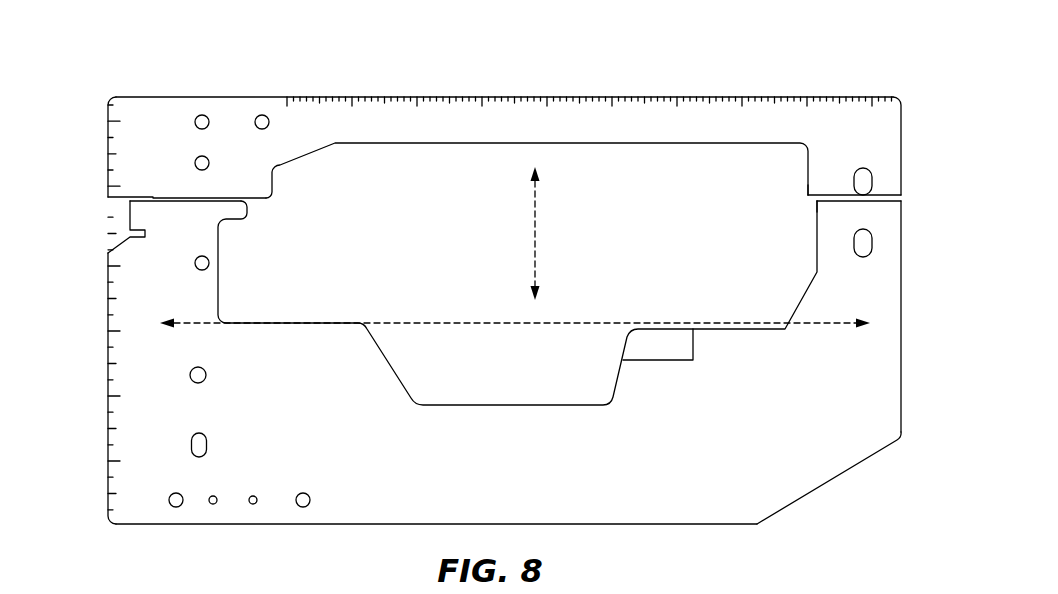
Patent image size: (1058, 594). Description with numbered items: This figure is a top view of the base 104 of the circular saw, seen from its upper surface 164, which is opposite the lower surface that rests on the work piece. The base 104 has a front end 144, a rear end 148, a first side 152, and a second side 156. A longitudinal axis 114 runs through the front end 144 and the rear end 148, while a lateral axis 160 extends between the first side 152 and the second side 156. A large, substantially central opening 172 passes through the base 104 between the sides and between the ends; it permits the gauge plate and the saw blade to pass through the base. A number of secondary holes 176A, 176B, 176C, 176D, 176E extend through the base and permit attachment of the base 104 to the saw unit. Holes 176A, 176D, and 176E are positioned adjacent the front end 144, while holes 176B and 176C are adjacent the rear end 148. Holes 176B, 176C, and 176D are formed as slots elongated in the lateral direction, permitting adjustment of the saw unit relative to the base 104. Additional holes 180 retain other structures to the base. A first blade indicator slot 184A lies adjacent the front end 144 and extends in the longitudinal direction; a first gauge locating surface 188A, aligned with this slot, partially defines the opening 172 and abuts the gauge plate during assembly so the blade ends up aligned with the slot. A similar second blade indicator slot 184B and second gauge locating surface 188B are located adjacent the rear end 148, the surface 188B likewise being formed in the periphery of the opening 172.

The base 104 is at (847, 410).
The longitudinal axis 114 is at (437, 322).
The front end 144 is at (123, 85).
The rear end 148 is at (900, 85).
The first side 152 is at (537, 88).
The second side 156 is at (658, 533).
The lateral axis 160 is at (540, 235).
The upper surface 164 is at (873, 364).
The opening 172 is at (437, 168).
The hole 176A is at (195, 163).
The hole 176B is at (875, 245).
The hole 176C is at (875, 180).
The hole 176D is at (192, 447).
The hole 176E is at (198, 268).
The additional holes 180 is at (257, 117).
The first blade indicator slot 184A is at (190, 200).
The second blade indicator slot 184B is at (838, 200).
The first gauge locating surface 188A is at (268, 200).
The second gauge locating surface 188B is at (820, 196).